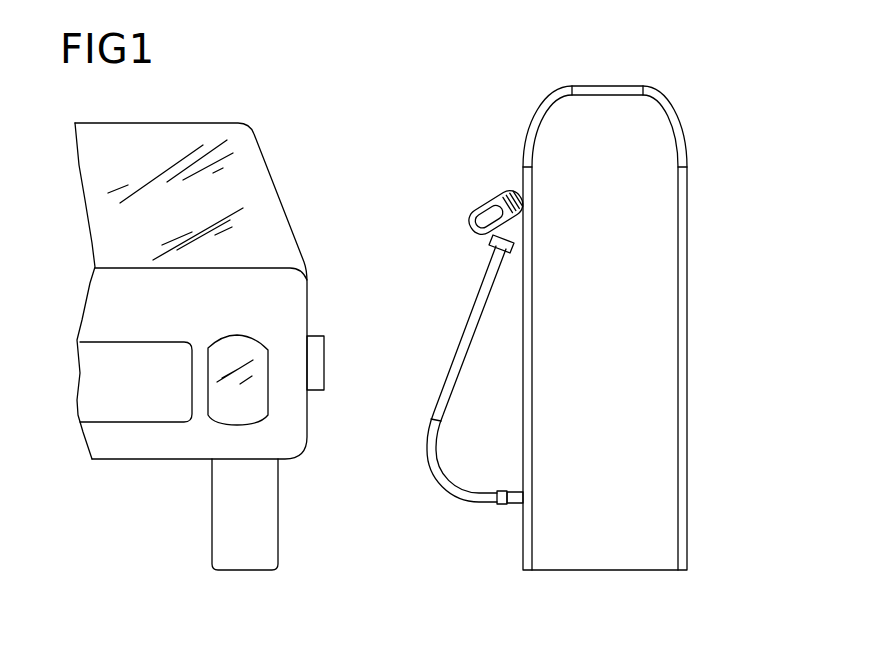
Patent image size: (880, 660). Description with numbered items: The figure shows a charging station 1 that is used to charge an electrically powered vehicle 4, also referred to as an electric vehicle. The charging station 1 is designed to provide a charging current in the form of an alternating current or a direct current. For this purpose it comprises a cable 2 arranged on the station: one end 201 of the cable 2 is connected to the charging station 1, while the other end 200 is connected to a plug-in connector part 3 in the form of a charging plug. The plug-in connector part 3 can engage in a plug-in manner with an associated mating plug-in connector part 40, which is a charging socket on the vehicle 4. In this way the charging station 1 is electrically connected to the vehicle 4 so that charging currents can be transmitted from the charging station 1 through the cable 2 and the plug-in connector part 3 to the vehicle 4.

The charging station 1 is at (690, 103).
The cable 2 is at (443, 502).
The plug-in connector part 3 is at (493, 177).
The electrically powered vehicle 4 is at (262, 115).
The mating plug-in connector part 40 is at (312, 368).
The end of the cable connected to the plug-in connector part 200 is at (480, 257).
The end of the cable connected to the charging station 201 is at (500, 510).